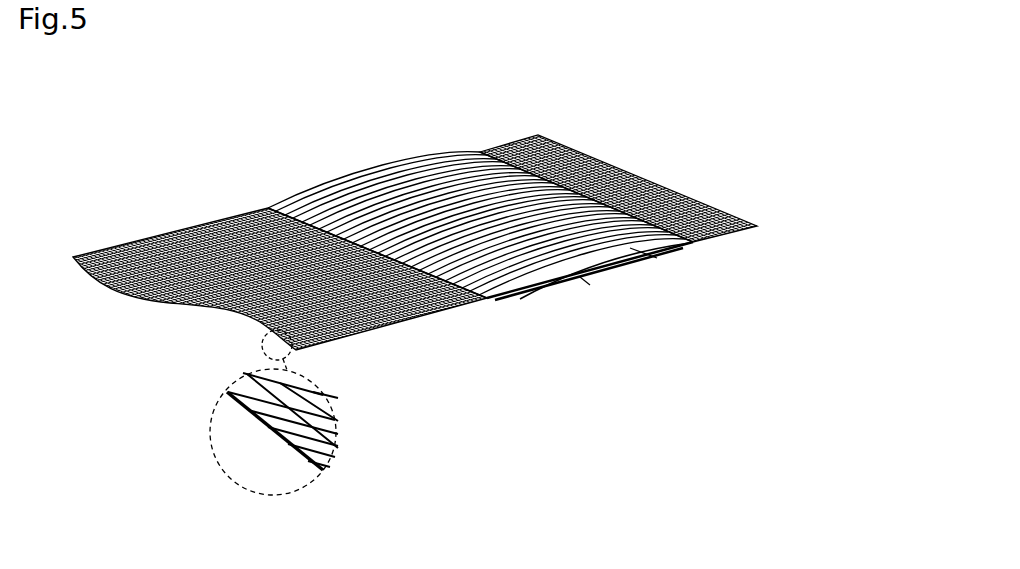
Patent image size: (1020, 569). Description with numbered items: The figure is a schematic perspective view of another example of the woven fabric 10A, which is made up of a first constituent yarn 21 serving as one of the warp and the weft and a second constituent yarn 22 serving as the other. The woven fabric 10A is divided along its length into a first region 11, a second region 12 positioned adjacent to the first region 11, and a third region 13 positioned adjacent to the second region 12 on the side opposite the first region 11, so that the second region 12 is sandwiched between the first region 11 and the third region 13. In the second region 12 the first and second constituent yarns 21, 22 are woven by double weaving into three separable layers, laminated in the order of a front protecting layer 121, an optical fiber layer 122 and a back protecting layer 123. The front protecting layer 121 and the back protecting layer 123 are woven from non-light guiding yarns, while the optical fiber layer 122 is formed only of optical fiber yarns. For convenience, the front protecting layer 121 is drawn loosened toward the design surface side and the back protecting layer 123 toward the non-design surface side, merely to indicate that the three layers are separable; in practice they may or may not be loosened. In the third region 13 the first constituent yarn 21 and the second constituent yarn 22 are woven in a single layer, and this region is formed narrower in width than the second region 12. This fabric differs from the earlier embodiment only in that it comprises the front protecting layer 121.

The woven fabric 10A is at (204, 150).
The first region 11 is at (264, 203).
The second region 12 is at (477, 150).
The third region 13 is at (533, 134).
The front protecting layer 121 is at (656, 254).
The optical fiber layer 122 is at (592, 285).
The back protecting layer 123 is at (522, 300).
The first constituent yarn 21 is at (327, 430).
The second constituent yarn 22 is at (247, 381).